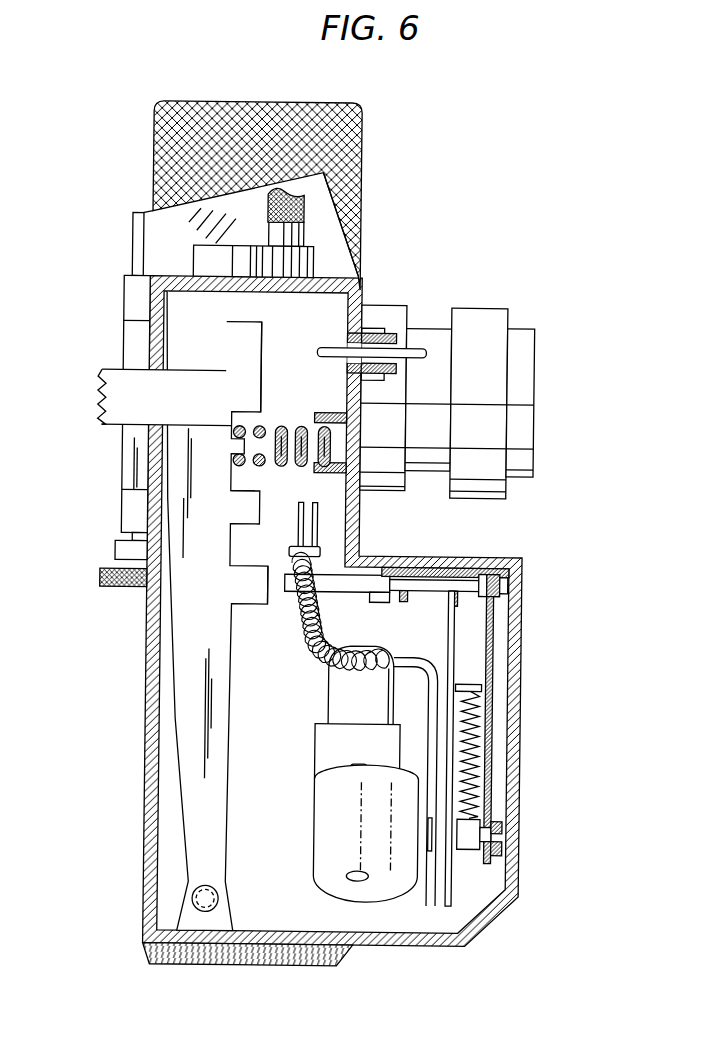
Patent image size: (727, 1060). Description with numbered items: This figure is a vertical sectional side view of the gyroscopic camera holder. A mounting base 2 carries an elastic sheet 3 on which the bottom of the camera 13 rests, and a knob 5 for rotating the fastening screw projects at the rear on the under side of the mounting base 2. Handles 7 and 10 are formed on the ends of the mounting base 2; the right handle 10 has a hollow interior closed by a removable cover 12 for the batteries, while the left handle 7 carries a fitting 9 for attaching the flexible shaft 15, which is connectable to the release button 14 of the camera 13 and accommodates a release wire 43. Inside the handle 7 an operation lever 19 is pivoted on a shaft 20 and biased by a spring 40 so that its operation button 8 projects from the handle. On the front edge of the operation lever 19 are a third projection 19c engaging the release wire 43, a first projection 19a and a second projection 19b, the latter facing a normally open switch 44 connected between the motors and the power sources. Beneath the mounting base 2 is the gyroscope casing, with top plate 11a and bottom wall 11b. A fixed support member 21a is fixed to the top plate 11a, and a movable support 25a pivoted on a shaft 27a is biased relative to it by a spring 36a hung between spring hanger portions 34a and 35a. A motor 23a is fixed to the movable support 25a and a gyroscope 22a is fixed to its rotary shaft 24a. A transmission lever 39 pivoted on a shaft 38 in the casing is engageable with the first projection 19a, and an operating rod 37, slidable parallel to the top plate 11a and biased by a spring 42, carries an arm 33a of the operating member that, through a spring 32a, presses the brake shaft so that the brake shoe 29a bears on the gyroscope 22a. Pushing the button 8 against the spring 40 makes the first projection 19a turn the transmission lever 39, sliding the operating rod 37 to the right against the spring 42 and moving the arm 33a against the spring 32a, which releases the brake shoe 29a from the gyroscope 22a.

The mounting base 2 is at (120, 552).
The elastic sheet 3 is at (128, 538).
The knob 5 is at (116, 587).
The left handle 7 is at (156, 656).
The operation button 8 is at (115, 376).
The fitting 9 is at (372, 332).
The right handle 10 is at (346, 150).
The top plate of casing 11a is at (514, 558).
The housing bottom wall 11b is at (404, 946).
The removable cover 12 is at (322, 957).
The camera 13 is at (328, 205).
The release button 14 is at (306, 236).
The flexible shaft 15 is at (267, 208).
The operation lever 19 is at (226, 764).
The first projection 19a is at (262, 600).
The second projection 19b is at (256, 510).
The third projection 19c is at (256, 348).
The shaft 20 is at (214, 898).
The fixed support member 21a is at (498, 640).
The gyroscope 22a is at (398, 880).
The motor 23a is at (352, 684).
The rotary shaft 24a is at (352, 760).
The movable support 25a is at (460, 775).
The shaft 27a is at (470, 852).
The brake shoe 29a is at (434, 890).
The spring 32a is at (508, 843).
The arm of operating member 33a is at (470, 578).
The spring hanger portion 34a is at (508, 830).
The spring hanger portion 35a is at (475, 690).
The spring 36a is at (484, 740).
The operating rod 37 is at (512, 593).
The shaft 38 is at (386, 568).
The transmission lever 39 is at (290, 578).
The spring 40 is at (300, 425).
The spring 42 is at (516, 578).
The release wire 43 is at (330, 357).
The normally open switch 44 is at (322, 526).